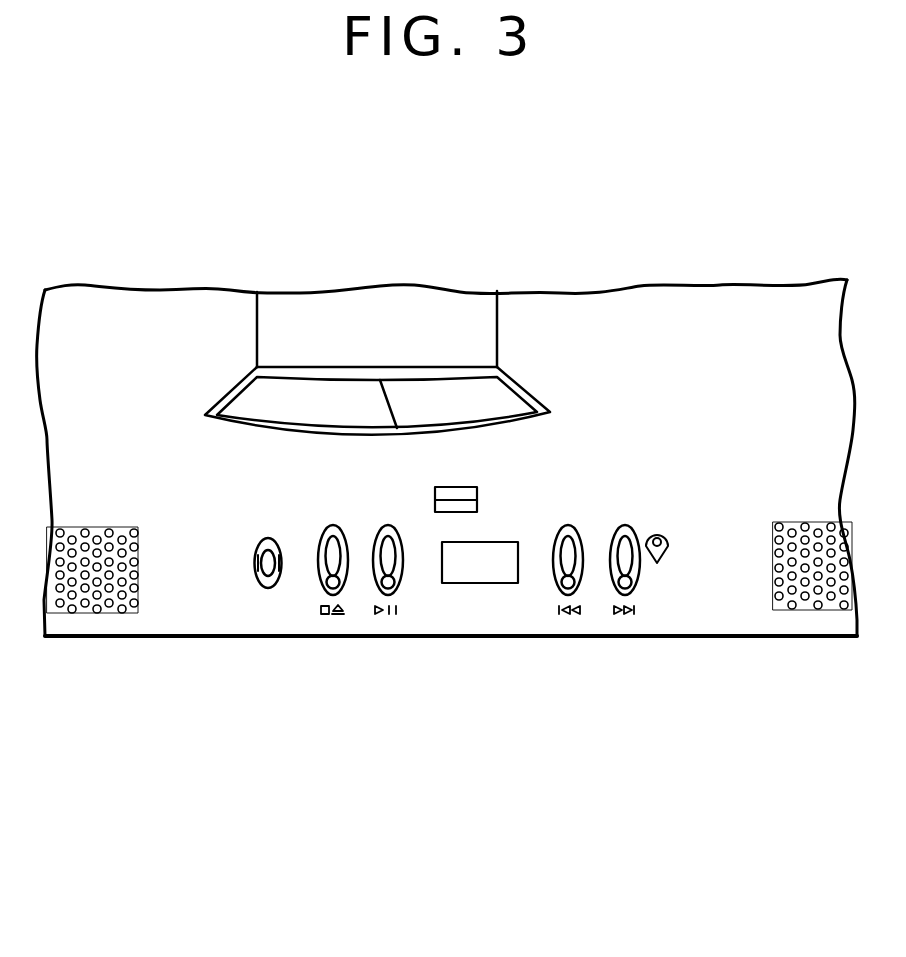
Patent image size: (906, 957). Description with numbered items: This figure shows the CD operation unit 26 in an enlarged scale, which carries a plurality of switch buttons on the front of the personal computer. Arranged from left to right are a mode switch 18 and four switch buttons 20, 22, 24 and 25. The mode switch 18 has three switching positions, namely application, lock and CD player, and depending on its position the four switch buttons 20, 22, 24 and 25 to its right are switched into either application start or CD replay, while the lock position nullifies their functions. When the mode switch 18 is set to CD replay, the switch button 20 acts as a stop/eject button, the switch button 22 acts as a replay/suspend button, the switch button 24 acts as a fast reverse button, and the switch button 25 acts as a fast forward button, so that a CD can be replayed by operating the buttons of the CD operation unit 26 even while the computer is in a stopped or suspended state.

The mode switch 18 is at (268, 568).
The switch button 20 is at (330, 563).
The switch button 22 is at (390, 563).
The switch button 24 is at (565, 563).
The switch button 25 is at (625, 562).
The CD operation unit 26 is at (471, 696).